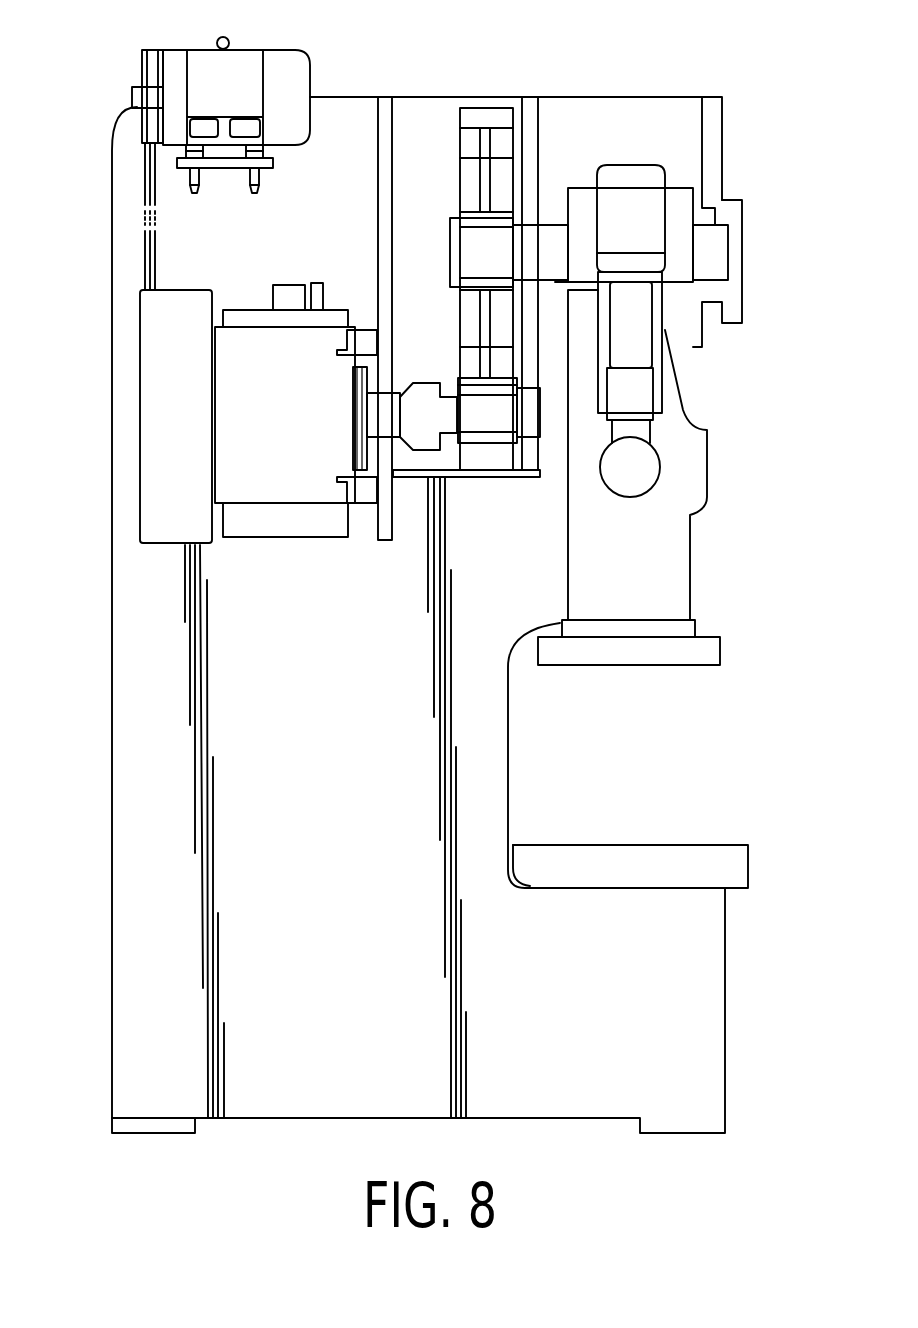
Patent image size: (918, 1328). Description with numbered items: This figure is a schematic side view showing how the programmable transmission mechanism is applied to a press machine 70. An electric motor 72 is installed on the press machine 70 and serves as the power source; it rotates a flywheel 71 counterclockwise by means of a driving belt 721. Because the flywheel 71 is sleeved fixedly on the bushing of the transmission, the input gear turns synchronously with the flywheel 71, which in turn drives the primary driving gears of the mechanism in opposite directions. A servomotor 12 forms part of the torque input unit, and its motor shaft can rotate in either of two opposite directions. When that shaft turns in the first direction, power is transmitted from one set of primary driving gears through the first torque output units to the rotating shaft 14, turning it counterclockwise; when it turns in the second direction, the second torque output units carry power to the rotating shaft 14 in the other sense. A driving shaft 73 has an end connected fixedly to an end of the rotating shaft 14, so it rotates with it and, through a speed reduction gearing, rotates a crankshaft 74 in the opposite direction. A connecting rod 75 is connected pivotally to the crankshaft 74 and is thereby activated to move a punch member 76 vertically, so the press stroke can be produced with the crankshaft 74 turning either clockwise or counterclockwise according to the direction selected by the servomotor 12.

The press machine 70 is at (112, 530).
The electric motor 72 is at (245, 62).
The driving belt 721 is at (145, 250).
The flywheel 71 is at (160, 362).
The servomotor 12 is at (282, 287).
The rotating shaft 14 is at (378, 417).
The driving shaft 73 is at (447, 425).
The crankshaft 74 is at (710, 247).
The connecting rod 75 is at (640, 327).
The punch member 76 is at (680, 580).